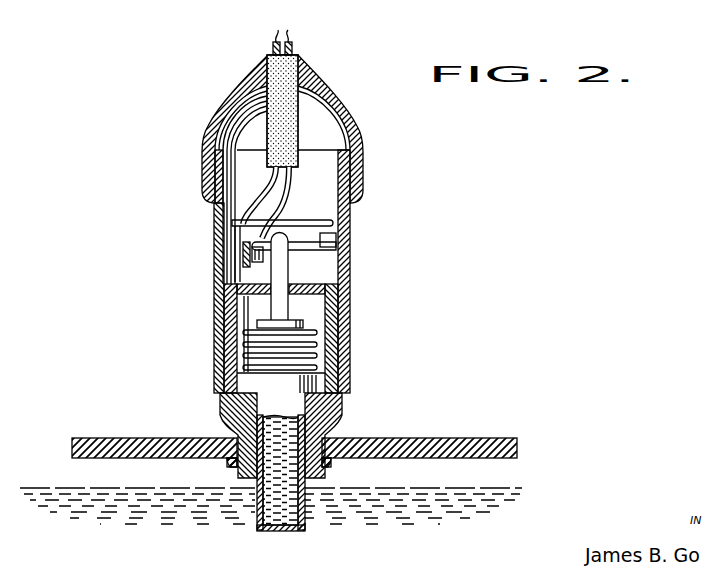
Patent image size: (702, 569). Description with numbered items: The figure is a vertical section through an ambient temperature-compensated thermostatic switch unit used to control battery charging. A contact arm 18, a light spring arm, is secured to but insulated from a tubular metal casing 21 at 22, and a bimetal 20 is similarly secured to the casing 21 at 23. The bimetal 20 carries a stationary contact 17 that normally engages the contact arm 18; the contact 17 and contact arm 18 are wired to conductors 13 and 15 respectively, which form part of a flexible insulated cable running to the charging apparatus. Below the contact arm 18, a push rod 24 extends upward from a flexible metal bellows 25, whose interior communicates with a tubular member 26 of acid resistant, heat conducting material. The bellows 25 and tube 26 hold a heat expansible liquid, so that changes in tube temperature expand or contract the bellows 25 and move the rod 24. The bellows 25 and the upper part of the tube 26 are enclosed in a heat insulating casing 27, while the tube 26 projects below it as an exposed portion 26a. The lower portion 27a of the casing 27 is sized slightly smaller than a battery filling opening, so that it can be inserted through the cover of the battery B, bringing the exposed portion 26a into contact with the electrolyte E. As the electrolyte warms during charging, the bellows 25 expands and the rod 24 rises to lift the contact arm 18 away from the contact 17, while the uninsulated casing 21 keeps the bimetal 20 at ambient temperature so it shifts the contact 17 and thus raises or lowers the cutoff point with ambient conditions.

The conductor 13 is at (292, 46).
The conductor 15 is at (279, 40).
The stationary contact 17 is at (340, 240).
The contact arm 18 is at (338, 223).
The bimetal 20 is at (338, 250).
The tubular metal casing 21 is at (216, 204).
The securing point of contact arm 22 is at (243, 246).
The securing point of bimetal 23 is at (252, 259).
The push rod 24 is at (289, 305).
The flexible metal bellows 25 is at (318, 346).
The tubular member 26 is at (323, 437).
The exposed portion of tube 26a is at (253, 528).
The heat insulating casing 27 is at (347, 395).
The lower portion of casing 27a is at (323, 438).
The battery B is at (163, 438).
The electrolyte E is at (271, 520).